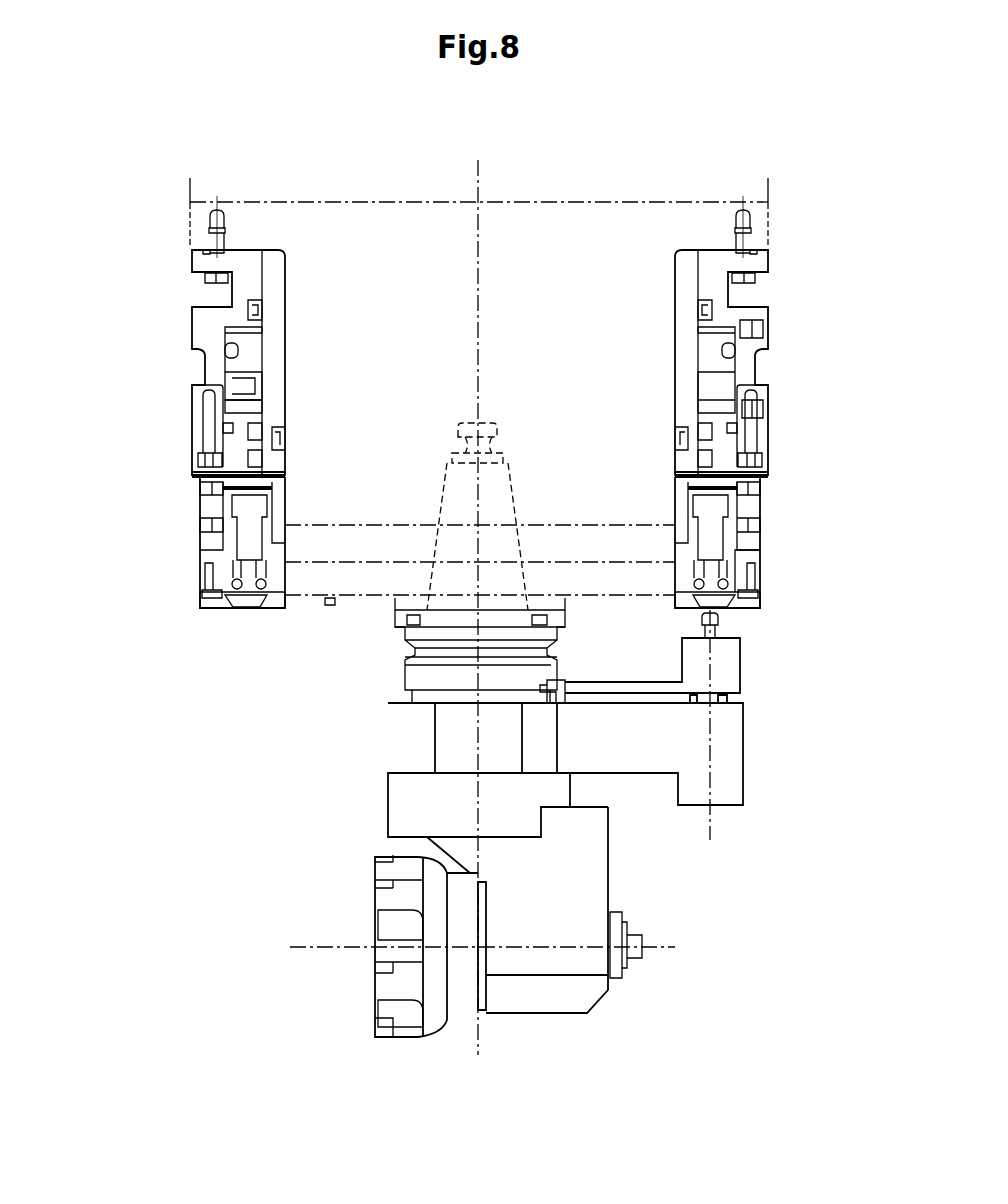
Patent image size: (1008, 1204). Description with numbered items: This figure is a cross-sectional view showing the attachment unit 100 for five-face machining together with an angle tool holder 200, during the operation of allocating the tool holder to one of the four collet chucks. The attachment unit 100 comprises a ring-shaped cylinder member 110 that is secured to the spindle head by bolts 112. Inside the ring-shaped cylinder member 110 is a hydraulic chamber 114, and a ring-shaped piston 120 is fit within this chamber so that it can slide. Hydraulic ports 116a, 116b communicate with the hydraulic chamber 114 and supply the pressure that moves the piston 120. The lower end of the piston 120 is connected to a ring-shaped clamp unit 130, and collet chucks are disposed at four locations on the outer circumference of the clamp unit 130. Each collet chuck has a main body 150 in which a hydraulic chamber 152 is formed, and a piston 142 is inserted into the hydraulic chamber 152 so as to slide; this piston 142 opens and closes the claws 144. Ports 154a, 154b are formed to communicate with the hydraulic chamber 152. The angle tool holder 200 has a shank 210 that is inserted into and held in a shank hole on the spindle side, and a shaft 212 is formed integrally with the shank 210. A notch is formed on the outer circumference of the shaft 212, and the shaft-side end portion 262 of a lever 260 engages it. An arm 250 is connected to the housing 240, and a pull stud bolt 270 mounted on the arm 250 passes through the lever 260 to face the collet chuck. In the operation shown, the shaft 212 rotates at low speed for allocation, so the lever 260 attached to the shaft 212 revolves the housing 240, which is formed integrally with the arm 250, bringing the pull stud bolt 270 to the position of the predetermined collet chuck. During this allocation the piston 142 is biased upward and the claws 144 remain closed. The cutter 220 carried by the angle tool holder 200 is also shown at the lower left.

The attachment unit for five-face machining 100 is at (120, 398).
The ring-shaped cylinder member 110 is at (757, 342).
The bolts 112 is at (750, 240).
The hydraulic chamber 114 is at (242, 388).
The hydraulic port 116a is at (763, 326).
The hydraulic port 116b is at (763, 410).
The ring-shaped piston 120 is at (708, 340).
The ring-shaped clamp unit 130 is at (737, 480).
The piston 142 is at (740, 510).
The claws 144 is at (727, 583).
The main body 150 is at (747, 560).
The hydraulic chamber 152 is at (222, 516).
The port 154a is at (200, 488).
The port 154b is at (200, 528).
The angle tool holder 200 is at (703, 893).
The shank 210 is at (445, 580).
The shaft 212 is at (413, 672).
The milling cutter 220 is at (388, 985).
The housing 240 is at (585, 960).
The arm 250 is at (733, 747).
The lever 260 is at (723, 683).
The shaft-side end portion 262 is at (552, 682).
The pull stud bolt 270 is at (705, 632).